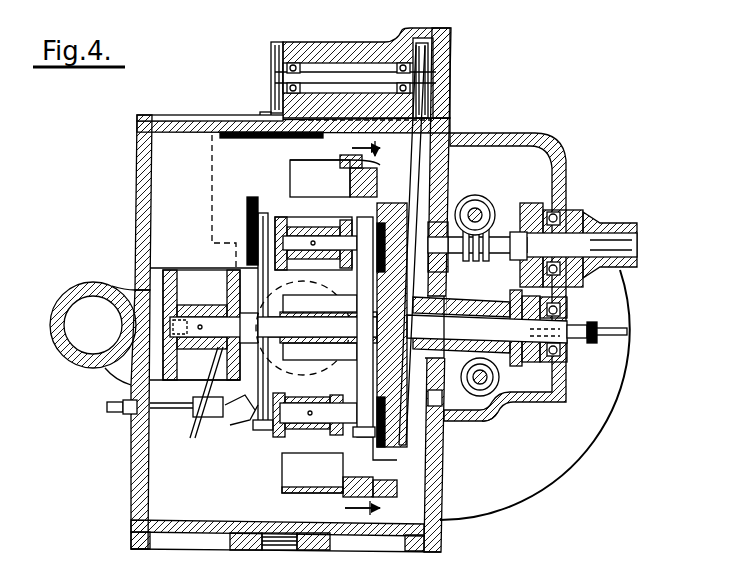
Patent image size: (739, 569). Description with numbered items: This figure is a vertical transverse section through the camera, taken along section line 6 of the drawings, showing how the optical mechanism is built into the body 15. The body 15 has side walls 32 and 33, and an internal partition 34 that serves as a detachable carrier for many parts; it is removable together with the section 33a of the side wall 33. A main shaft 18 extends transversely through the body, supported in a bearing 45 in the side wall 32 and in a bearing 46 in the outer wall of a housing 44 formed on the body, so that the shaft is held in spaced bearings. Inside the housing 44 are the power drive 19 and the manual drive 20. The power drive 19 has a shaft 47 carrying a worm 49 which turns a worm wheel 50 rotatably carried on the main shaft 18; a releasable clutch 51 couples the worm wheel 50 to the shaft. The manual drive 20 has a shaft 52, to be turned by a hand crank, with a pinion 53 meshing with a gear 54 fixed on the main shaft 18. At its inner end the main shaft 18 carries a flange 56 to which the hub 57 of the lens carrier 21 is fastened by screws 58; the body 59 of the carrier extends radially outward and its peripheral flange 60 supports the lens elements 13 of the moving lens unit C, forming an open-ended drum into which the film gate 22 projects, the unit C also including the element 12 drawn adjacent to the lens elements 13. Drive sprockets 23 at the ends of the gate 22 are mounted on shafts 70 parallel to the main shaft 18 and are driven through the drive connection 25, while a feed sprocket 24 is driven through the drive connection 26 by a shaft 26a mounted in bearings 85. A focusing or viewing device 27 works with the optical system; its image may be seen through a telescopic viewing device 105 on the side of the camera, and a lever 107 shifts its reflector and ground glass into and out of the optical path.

The section line 6 is at (353, 327).
The brake drum 12 is at (310, 166).
The lens elements 13 is at (318, 160).
The body 15 is at (441, 546).
The main shaft 18 is at (477, 303).
The power drive 19 is at (500, 408).
The manual drive 20 is at (625, 225).
The lens carrier 21 is at (405, 473).
The gate 22 is at (320, 334).
The drive sprockets 23 is at (305, 226).
The feed sprocket 24 is at (205, 350).
The drive connection 25 is at (378, 215).
The drive connection 26 is at (248, 318).
The shaft 26a is at (317, 327).
The focusing or viewing device 27 is at (215, 118).
The side wall 32 is at (437, 500).
The side wall 33 is at (131, 470).
The section of side wall 33a is at (190, 268).
The internal partition 34 is at (160, 205).
The housing 44 is at (520, 133).
The bearing 45 is at (450, 300).
The bearing 46 is at (570, 305).
The shaft 47 is at (481, 382).
The worm 49 is at (452, 388).
The worm wheel 50 is at (508, 300).
The releasable clutch 51 is at (515, 370).
The shaft 52 is at (495, 240).
The pinion 53 is at (530, 205).
The gear 54 is at (570, 352).
The flange 56 is at (452, 328).
The hub 57 is at (405, 395).
The screws 58 is at (378, 300).
The body of lens carrier 59 is at (395, 460).
The peripheral flange 60 is at (385, 497).
The shafts 70 is at (240, 432).
The bearings 85 is at (262, 345).
The telescopic viewing device 105 is at (72, 350).
The lever 107 is at (195, 410).
The moving lens unit C is at (345, 168).